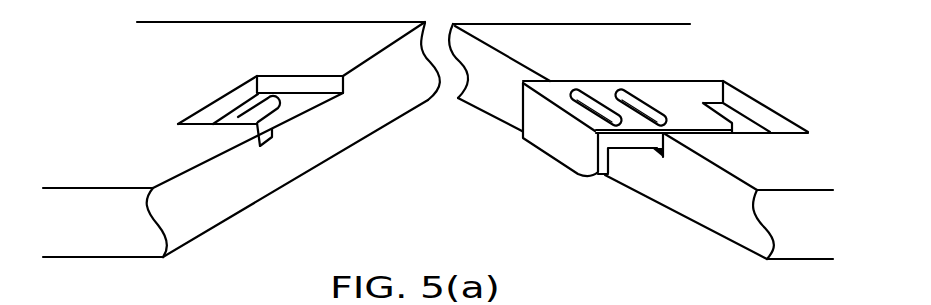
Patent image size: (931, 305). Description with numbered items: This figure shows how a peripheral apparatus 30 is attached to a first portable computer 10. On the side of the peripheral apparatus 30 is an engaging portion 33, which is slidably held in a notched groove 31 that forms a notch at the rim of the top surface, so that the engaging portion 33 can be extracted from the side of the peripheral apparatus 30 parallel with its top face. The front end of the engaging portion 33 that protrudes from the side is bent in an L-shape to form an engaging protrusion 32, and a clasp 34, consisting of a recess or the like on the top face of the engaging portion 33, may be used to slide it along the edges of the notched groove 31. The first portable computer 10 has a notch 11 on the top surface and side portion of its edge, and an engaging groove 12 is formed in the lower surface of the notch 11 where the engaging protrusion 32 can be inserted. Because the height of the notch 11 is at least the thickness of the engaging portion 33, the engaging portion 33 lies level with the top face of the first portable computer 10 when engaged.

The first portable computer 10 is at (148, 72).
The notch 11 is at (307, 105).
The engaging groove 12 is at (262, 112).
The peripheral apparatus 30 is at (580, 66).
The notched groove 31 is at (738, 93).
The engaging protrusion 32 is at (555, 160).
The engaging portion 33 is at (670, 97).
The clasp 34 is at (568, 92).